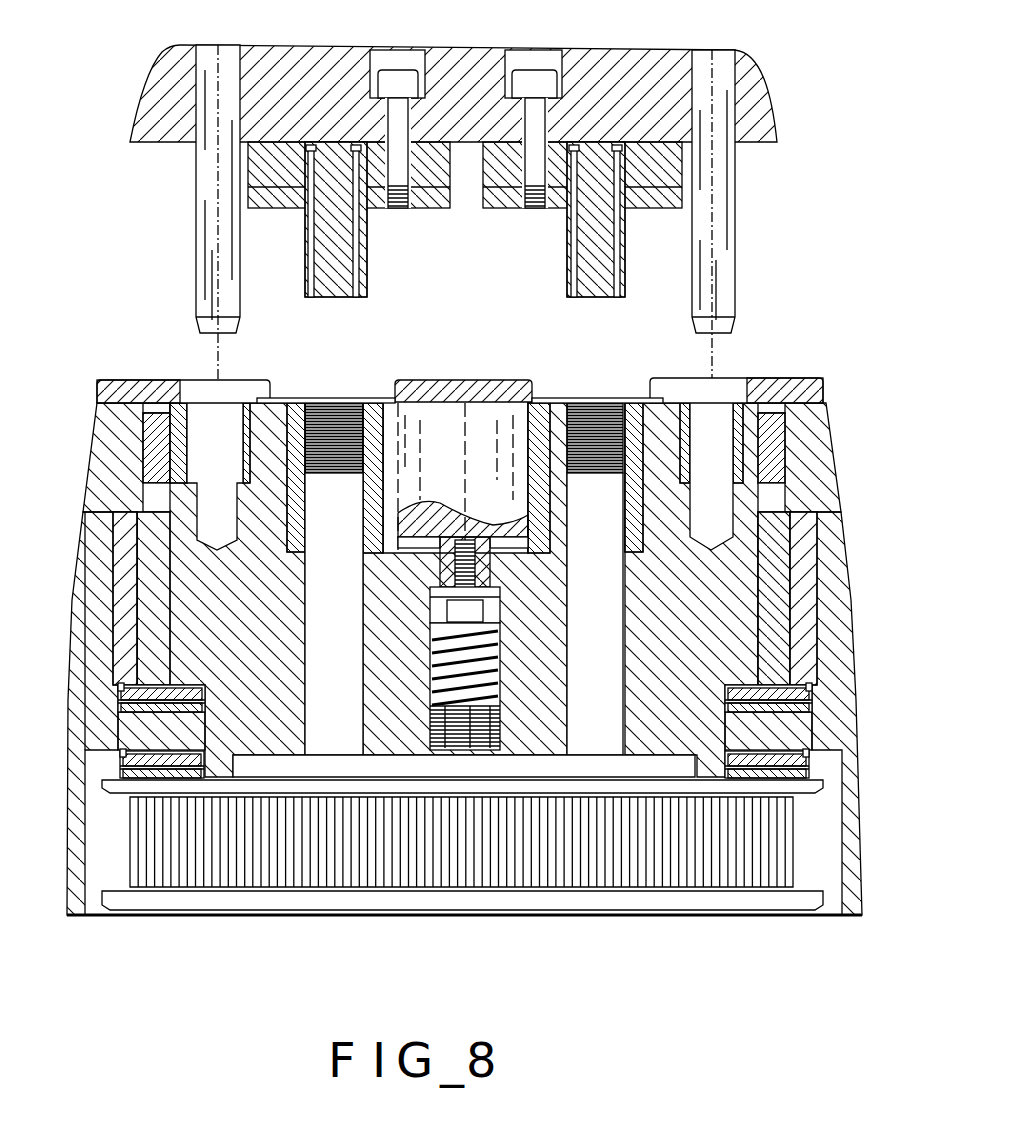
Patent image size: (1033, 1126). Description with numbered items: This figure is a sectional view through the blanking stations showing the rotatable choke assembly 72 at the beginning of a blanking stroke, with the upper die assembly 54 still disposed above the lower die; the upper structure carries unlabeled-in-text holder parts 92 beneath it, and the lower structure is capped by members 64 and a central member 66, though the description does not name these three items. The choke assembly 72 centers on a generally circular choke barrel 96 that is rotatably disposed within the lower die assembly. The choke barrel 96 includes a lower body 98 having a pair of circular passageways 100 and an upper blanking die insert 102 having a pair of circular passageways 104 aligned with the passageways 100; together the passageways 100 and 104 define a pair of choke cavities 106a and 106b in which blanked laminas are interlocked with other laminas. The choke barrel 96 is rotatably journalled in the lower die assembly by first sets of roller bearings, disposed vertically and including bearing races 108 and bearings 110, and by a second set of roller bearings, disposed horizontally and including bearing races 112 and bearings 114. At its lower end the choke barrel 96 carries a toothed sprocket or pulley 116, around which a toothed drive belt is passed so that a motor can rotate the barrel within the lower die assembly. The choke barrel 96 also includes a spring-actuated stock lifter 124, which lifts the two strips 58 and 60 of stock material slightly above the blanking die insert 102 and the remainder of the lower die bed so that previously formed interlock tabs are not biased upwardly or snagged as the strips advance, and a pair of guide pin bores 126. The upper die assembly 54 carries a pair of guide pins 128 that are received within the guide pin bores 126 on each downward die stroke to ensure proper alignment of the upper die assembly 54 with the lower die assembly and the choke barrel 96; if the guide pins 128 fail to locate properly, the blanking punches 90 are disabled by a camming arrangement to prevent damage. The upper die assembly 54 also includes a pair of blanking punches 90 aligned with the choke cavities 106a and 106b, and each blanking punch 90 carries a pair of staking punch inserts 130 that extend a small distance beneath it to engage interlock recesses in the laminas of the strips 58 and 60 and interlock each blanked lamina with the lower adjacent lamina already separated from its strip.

The upper die assembly 54 is at (773, 70).
The strip of stock material 58 is at (295, 393).
The strip of stock material 60 is at (558, 393).
The end caps 64 is at (116, 388).
The center cap 66 is at (450, 382).
The choke assembly 72 is at (820, 321).
The blanking punches 90 is at (143, 321).
The punch holder blocks 92 is at (345, 240).
The choke barrel 96 is at (705, 612).
The lower body 98 is at (465, 686).
The circular passageways 100 is at (358, 685).
The upper blanking die insert 102 is at (372, 435).
The circular passageways 104 is at (350, 494).
The choke cavity 106a is at (321, 634).
The choke cavity 106b is at (588, 634).
The bearing races 108 is at (122, 565).
The bearings 110 is at (155, 447).
The bearing races 112 is at (135, 712).
The bearings 114 is at (125, 690).
The toothed sprocket or pulley 116 is at (740, 855).
The spring-actuated stock lifter 124 is at (480, 440).
The guide pin bores 126 is at (206, 420).
The guide pins 128 is at (208, 184).
The staking punch inserts 130 is at (362, 297).